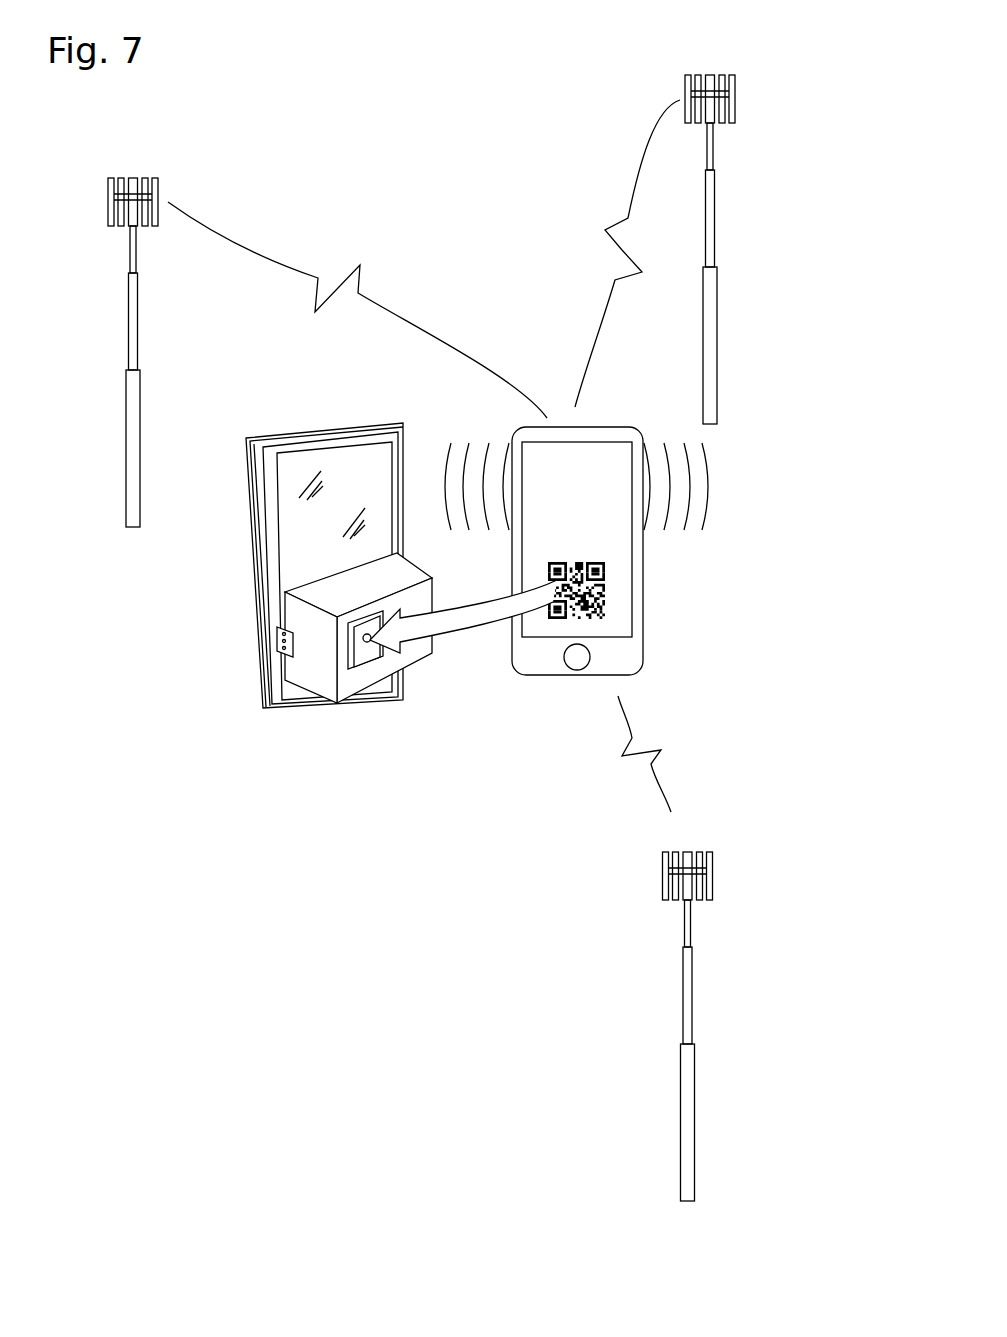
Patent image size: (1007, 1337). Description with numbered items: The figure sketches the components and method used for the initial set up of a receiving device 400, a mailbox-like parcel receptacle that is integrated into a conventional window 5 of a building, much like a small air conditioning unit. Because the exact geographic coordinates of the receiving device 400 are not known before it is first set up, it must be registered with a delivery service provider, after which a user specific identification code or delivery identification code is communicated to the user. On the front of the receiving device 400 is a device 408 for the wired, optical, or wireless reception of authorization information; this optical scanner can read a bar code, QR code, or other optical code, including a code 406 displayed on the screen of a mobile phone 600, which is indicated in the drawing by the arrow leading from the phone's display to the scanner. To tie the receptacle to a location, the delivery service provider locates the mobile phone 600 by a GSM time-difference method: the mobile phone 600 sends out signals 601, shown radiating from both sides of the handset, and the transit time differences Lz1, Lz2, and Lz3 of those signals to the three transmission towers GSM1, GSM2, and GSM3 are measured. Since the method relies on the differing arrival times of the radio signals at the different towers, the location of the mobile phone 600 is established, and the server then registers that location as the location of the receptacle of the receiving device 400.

The window 5 is at (285, 397).
The receiving device 400 is at (313, 662).
The QR code 406 is at (605, 607).
The device for wired, optical, or wireless reception of authorization information 408 is at (373, 645).
The mobile phone 600 is at (625, 660).
The signals 601 is at (697, 512).
The tower GSM1 is at (133, 318).
The tower GSM2 is at (710, 300).
The tower GSM3 is at (688, 1098).
The transit time difference Lz1 is at (350, 237).
The transit time difference Lz2 is at (611, 197).
The transit time difference Lz3 is at (605, 771).